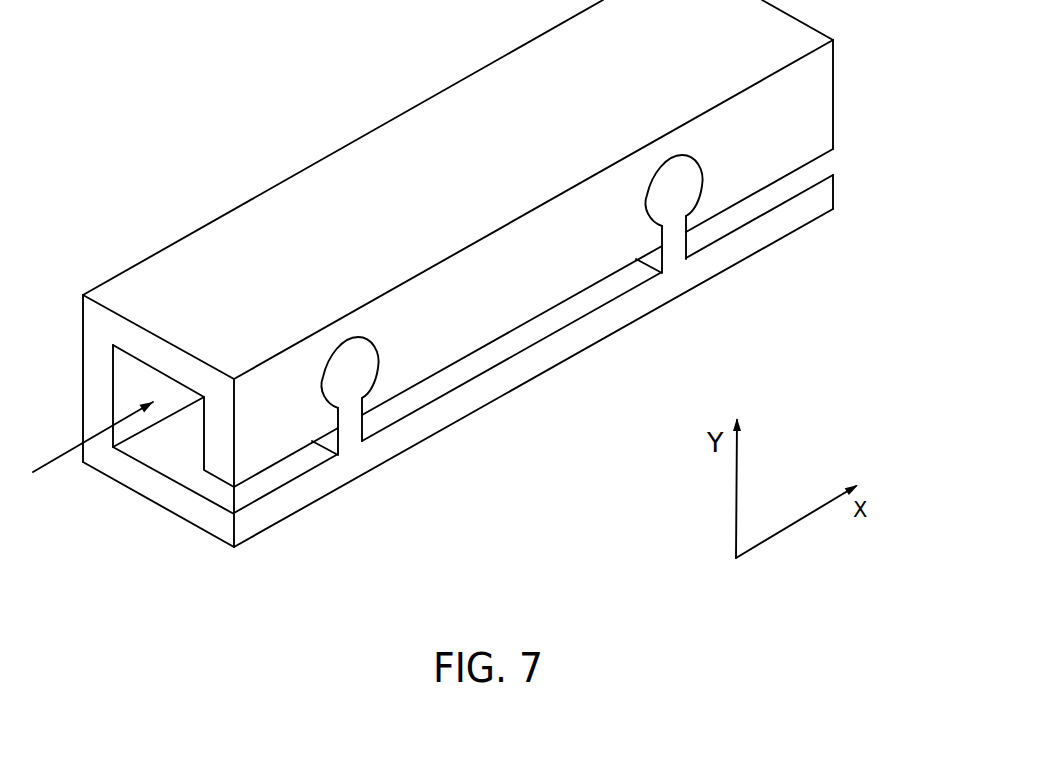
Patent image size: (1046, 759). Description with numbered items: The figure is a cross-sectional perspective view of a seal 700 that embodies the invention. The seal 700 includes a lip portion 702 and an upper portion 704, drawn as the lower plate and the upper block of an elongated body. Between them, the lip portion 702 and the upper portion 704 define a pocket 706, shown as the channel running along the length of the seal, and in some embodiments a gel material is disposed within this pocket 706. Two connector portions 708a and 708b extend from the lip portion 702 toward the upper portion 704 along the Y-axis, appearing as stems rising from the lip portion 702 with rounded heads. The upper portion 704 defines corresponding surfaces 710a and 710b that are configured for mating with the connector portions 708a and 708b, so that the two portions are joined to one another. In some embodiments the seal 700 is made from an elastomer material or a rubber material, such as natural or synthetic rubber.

The seal 700 is at (129, 116).
The lip portion 702 is at (193, 512).
The upper portion 704 is at (387, 130).
The pocket 706 is at (33, 472).
The connector portion 708a is at (658, 207).
The connector portion 708b is at (333, 388).
The surface 710a is at (703, 162).
The surface 710b is at (379, 348).